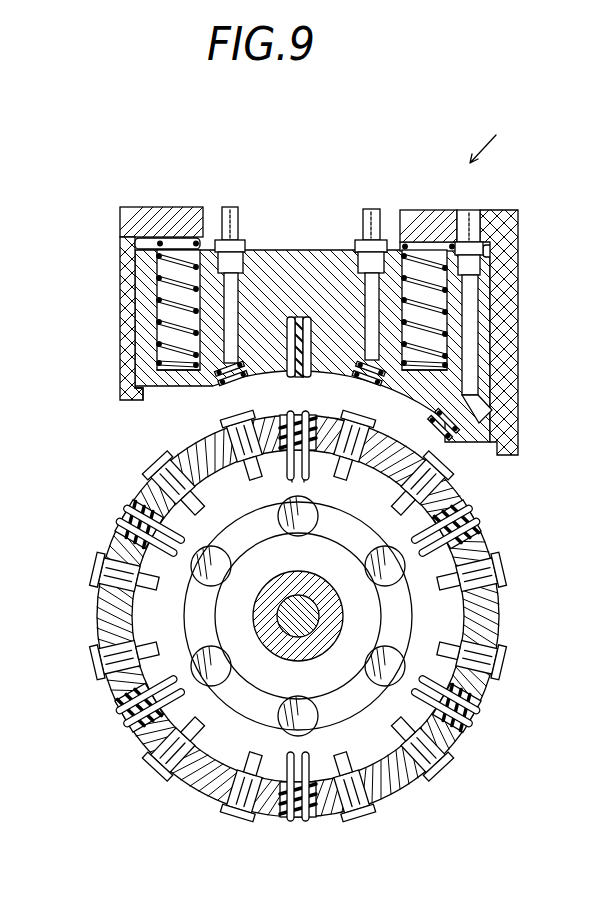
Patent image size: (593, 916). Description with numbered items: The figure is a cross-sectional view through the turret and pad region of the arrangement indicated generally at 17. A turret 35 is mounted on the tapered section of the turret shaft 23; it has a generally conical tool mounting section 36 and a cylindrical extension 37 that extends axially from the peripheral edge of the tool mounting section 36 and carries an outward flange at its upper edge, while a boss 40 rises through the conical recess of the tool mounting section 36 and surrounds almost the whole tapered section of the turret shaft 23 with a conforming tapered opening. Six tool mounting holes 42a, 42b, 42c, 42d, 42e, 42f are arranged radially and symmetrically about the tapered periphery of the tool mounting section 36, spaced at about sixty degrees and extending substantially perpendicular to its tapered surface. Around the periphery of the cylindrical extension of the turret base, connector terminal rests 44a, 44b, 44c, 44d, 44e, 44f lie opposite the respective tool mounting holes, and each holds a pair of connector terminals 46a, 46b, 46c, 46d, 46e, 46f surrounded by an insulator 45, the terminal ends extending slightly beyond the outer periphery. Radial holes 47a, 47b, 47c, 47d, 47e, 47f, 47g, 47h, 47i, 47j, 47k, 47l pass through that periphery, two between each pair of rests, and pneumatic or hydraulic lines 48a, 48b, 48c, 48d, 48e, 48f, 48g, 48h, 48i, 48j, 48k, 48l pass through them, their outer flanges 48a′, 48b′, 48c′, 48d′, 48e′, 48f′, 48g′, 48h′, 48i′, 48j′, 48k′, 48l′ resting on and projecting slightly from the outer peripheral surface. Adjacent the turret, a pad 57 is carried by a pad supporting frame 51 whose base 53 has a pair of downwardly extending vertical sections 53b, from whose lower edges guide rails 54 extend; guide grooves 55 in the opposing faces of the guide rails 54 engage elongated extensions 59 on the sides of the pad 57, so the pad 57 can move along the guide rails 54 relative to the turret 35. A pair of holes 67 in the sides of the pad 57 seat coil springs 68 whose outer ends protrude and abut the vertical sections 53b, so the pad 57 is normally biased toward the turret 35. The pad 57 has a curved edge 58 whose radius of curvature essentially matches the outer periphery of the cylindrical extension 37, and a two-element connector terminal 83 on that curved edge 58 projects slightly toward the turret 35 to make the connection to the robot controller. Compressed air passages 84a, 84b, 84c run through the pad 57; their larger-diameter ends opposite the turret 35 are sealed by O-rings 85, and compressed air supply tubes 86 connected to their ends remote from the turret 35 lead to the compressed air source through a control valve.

The clutch assembly 17 is at (493, 134).
The turret shaft 23 is at (292, 634).
The turret 35 is at (499, 632).
The conical tool mounting section 36 is at (378, 700).
The cylindrical extension 37 is at (468, 616).
The boss 40 is at (258, 614).
The tool mounting hole 42a is at (293, 535).
The tool mounting hole 42b is at (365, 566).
The tool mounting hole 42c is at (401, 659).
The tool mounting hole 42d is at (306, 700).
The tool mounting hole 42e is at (198, 654).
The tool mounting hole 42f is at (210, 547).
The connector terminal rest 44a is at (308, 782).
The connector terminal rest 44b is at (136, 704).
The connector terminal rest 44c is at (136, 538).
The connector terminal rest 44d is at (306, 426).
The connector terminal rest 44e is at (464, 531).
The connector terminal rest 44f is at (464, 708).
The insulator 45 is at (138, 539).
The connector terminals 46a is at (293, 823).
The connector terminals 46b is at (144, 708).
The connector terminals 46c is at (148, 527).
The connector terminals 46d is at (290, 416).
The connector terminals 46e is at (454, 534).
The connector terminals 46f is at (452, 707).
The hole 47a is at (345, 762).
The hole 47b is at (252, 762).
The hole 47c is at (196, 729).
The hole 47d is at (150, 647).
The hole 47e is at (150, 586).
The hole 47f is at (196, 508).
The hole 47g is at (253, 481).
The hole 47h is at (345, 481).
The hole 47i is at (403, 512).
The hole 47j is at (447, 584).
The hole 47k is at (446, 650).
The hole 47l is at (402, 729).
The pneumatic or hydraulic line 48a is at (352, 800).
The pneumatic or hydraulic line 48b is at (249, 796).
The pneumatic or hydraulic line 48c is at (175, 752).
The pneumatic or hydraulic line 48d is at (118, 660).
The pneumatic or hydraulic line 48e is at (120, 573).
The pneumatic or hydraulic line 48f is at (170, 484).
The pneumatic or hydraulic line 48g is at (236, 446).
The pneumatic or hydraulic line 48h is at (345, 462).
The pneumatic or hydraulic line 48i is at (428, 490).
The pneumatic or hydraulic line 48j is at (480, 582).
The pneumatic or hydraulic line 48k is at (478, 660).
The pneumatic or hydraulic line 48l is at (422, 756).
The outer flange 48a′ is at (362, 816).
The outer flange 48b′ is at (238, 818).
The outer flange 48c′ is at (157, 766).
The outer flange 48d′ is at (97, 660).
The outer flange 48e′ is at (98, 575).
The outer flange 48f′ is at (160, 466).
The outer flange 48g′ is at (230, 432).
The outer flange 48h′ is at (369, 441).
The outer flange 48i′ is at (440, 470).
The outer flange 48j′ is at (499, 575).
The outer flange 48k′ is at (498, 666).
The outer flange 48l′ is at (440, 769).
The pad supporting frame 51 is at (505, 272).
The base 53 is at (138, 207).
The vertical section 53b is at (182, 207).
The guide rail 54 is at (128, 296).
The guide groove 55 is at (135, 243).
The pad 57 is at (330, 250).
The curved edge 58 is at (303, 376).
The elongated extension 59 is at (136, 370).
The hole 67 is at (165, 322).
The coil spring 68 is at (157, 282).
The two-element connector terminal 83 is at (237, 316).
The compressed air passage 84a is at (165, 354).
The compressed air passage 84b is at (358, 250).
The compressed air passage 84c is at (447, 335).
The O-ring 85 is at (237, 366).
The compressed air supply tube 86 is at (230, 207).